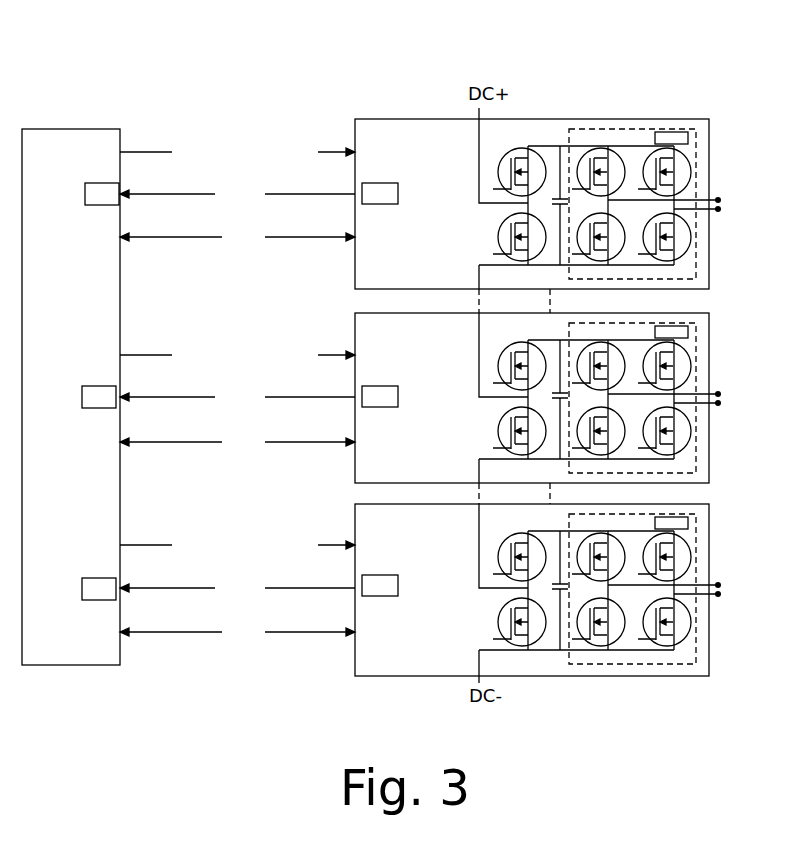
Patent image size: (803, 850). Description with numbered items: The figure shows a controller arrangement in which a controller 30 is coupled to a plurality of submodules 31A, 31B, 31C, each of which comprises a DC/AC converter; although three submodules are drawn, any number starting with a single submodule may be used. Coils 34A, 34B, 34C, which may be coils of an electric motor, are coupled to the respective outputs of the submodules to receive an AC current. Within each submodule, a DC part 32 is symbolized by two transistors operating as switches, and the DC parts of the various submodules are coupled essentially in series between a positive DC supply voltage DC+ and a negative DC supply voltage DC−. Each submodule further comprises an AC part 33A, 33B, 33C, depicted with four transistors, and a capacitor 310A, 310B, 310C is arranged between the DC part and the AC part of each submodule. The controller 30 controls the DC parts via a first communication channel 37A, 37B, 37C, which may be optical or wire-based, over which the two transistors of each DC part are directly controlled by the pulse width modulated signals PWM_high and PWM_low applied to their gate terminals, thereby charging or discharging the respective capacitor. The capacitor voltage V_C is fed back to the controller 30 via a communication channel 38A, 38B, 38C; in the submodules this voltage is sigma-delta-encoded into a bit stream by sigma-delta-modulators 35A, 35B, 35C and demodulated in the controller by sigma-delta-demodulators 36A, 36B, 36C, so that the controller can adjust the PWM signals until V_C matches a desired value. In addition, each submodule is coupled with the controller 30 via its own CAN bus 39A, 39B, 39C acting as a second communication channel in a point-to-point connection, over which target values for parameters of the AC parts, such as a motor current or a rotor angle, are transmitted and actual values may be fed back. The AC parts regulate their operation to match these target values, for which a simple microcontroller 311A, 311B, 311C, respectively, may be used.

The controller 30 is at (48, 129).
The submodule 31A is at (372, 117).
The submodule 31B is at (352, 331).
The submodule 31C is at (352, 523).
The DC part 32 is at (529, 128).
The capacitor 310A is at (563, 197).
The capacitor 310B is at (563, 392).
The capacitor 310C is at (563, 583).
The AC part 33A is at (627, 128).
The AC part 33B is at (698, 473).
The AC part 33C is at (698, 653).
The microcontroller 311A is at (687, 142).
The microcontroller 311B is at (685, 337).
The microcontroller 311C is at (688, 527).
The coil 34A is at (718, 200).
The coil 34B is at (718, 394).
The coil 34C is at (718, 585).
The sigma-delta-modulator 35A is at (380, 182).
The sigma-delta-modulator 35B is at (383, 385).
The sigma-delta-modulator 35C is at (380, 574).
The sigma-delta-demodulator 36A is at (83, 181).
The sigma-delta-demodulator 36B is at (87, 411).
The sigma-delta-demodulator 36C is at (80, 577).
The first communication channel 37A is at (148, 152).
The first communication channel 37B is at (145, 355).
The first communication channel 37C is at (140, 545).
The communication channel 38A is at (148, 194).
The communication channel 38B is at (145, 397).
The communication channel 38C is at (148, 588).
The CAN bus 39A is at (152, 237).
The CAN bus 39B is at (148, 443).
The CAN bus 39C is at (147, 632).